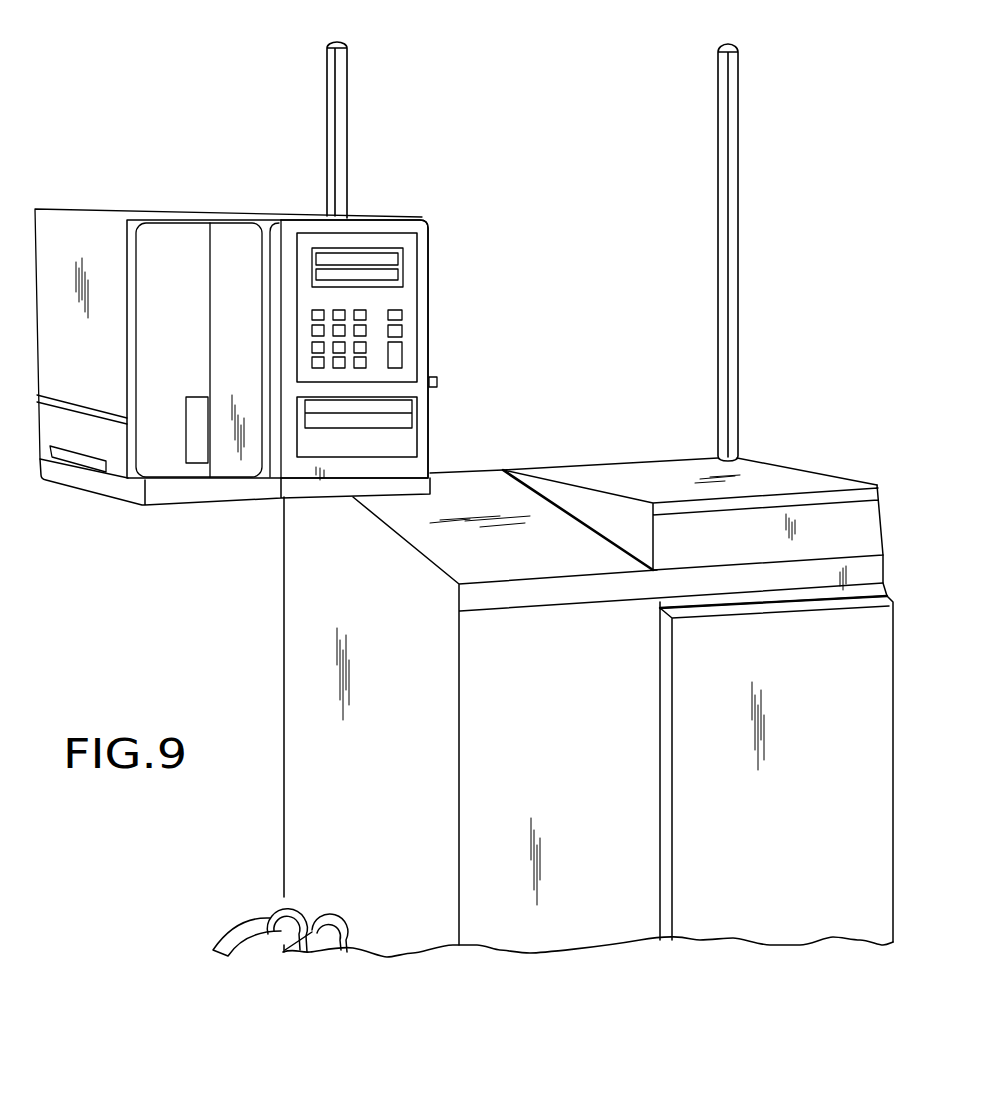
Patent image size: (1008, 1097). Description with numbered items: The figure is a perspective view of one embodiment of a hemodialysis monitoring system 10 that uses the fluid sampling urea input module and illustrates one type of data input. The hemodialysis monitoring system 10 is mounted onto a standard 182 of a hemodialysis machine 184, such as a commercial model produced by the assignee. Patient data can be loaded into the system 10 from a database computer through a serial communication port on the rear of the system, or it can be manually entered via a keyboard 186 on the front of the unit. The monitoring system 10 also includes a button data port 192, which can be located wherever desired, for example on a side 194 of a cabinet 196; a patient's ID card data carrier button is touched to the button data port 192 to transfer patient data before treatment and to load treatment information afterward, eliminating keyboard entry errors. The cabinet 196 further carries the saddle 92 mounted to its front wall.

The hemodialysis monitoring system 10 is at (277, 331).
The saddle 92 is at (405, 406).
The standard 182 is at (343, 79).
The hemodialysis machine 184 is at (572, 463).
The keyboard 186 is at (316, 320).
The button data port 192 is at (437, 381).
The side 194 is at (429, 313).
The cabinet 196 is at (419, 252).